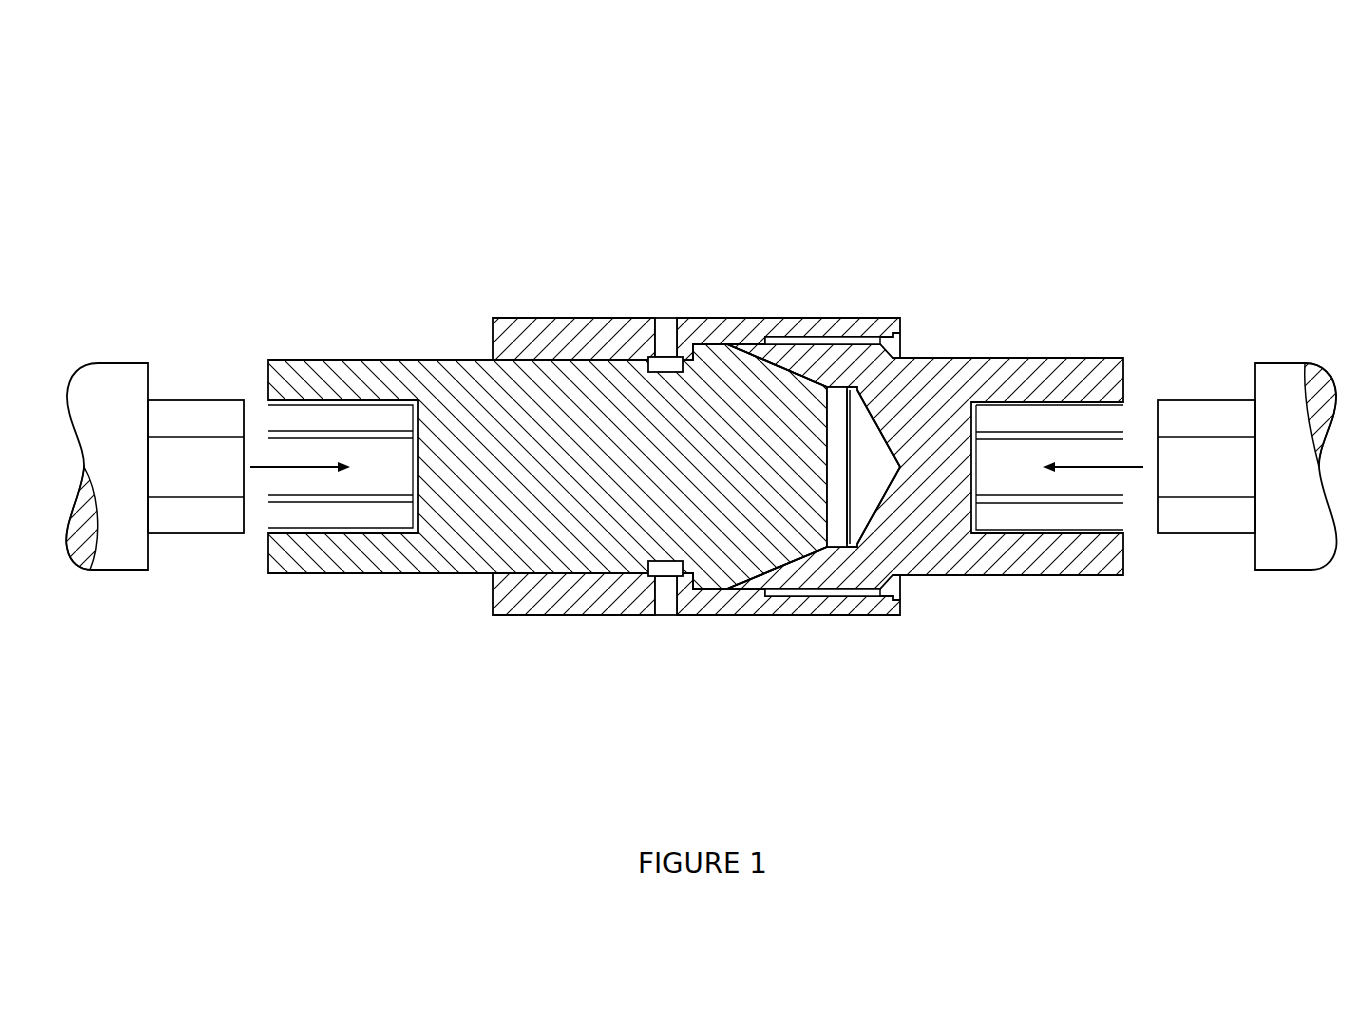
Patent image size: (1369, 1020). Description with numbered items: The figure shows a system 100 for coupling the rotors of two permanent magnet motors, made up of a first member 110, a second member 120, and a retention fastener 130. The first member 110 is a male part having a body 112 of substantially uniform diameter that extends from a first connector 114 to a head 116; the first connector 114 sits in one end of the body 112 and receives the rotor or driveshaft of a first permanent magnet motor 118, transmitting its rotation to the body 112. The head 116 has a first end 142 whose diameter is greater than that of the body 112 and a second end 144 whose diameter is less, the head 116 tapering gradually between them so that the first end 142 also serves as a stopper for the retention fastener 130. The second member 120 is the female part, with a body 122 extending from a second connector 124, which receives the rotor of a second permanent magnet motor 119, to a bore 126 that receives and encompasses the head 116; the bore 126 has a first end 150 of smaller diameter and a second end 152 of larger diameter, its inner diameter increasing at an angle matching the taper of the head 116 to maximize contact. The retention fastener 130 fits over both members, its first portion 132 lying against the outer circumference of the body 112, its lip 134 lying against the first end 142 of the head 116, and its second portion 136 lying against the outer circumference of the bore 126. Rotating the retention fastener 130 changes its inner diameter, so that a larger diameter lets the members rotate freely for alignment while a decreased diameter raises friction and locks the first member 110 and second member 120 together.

The system 100 is at (203, 160).
The first member 110 is at (566, 501).
The body 112 is at (510, 495).
The first connector 114 is at (336, 546).
The head 116 is at (737, 463).
The first permanent magnet motor 118 is at (108, 580).
The second permanent magnet motor 119 is at (1288, 580).
The second member 120 is at (934, 469).
The body 122 is at (943, 375).
The second connector 124 is at (1083, 546).
The bore 126 is at (800, 370).
The retention fastener 130 is at (696, 479).
The first portion 132 is at (583, 360).
The lip 134 is at (690, 580).
The second portion 136 is at (790, 590).
The first end 142 is at (693, 344).
The second end 144 is at (837, 483).
The first end 150 is at (903, 375).
The second end 152 is at (813, 557).